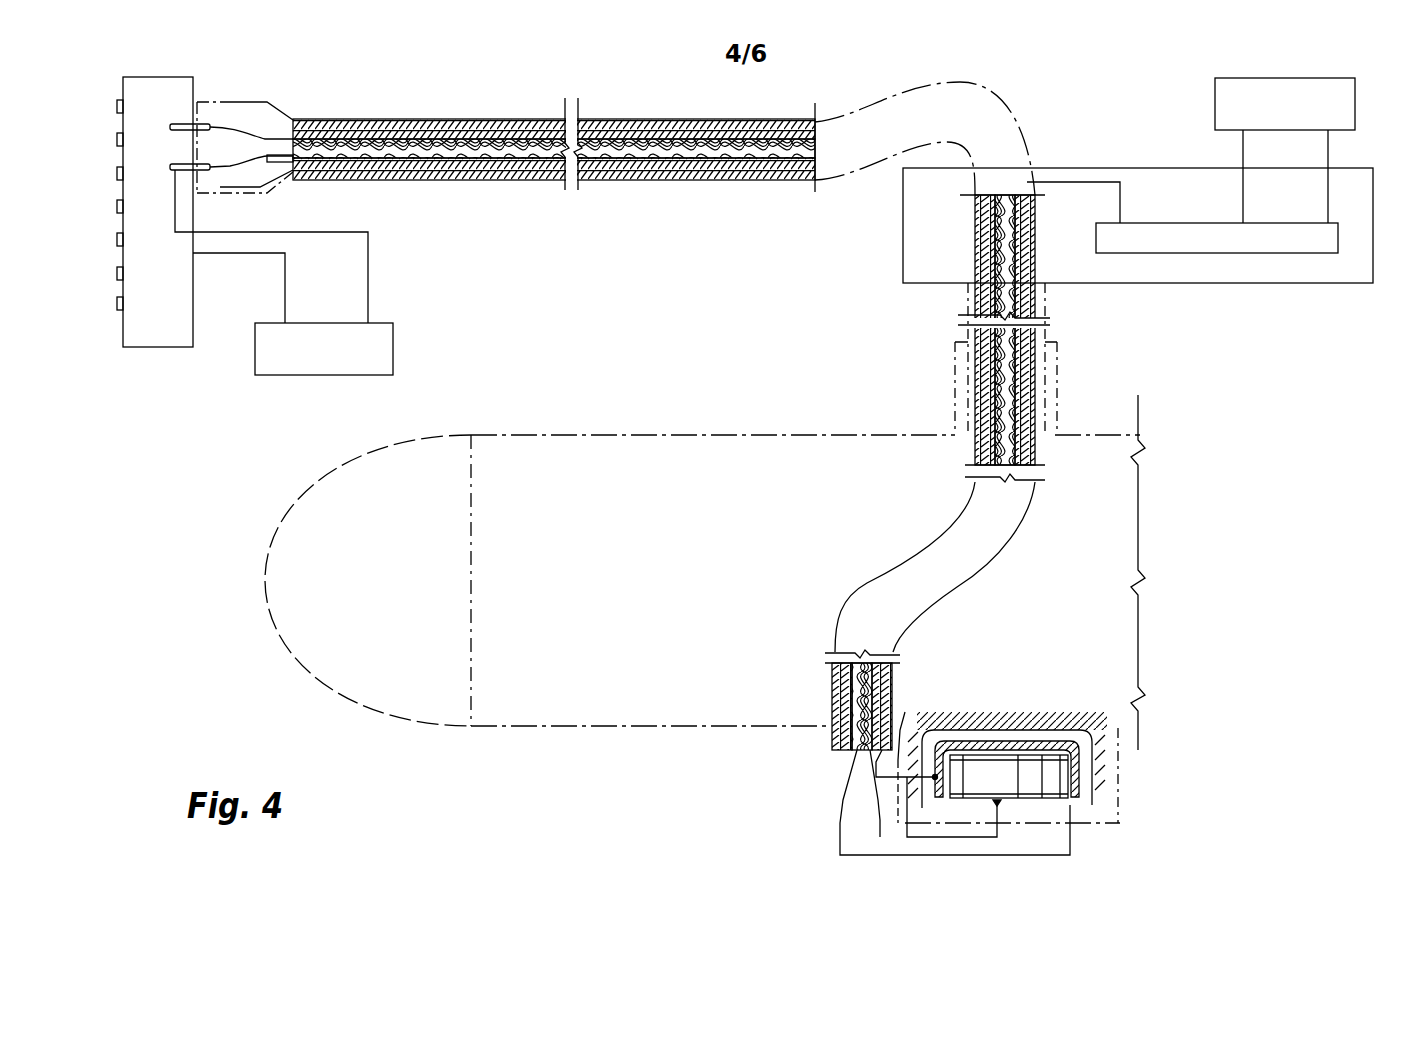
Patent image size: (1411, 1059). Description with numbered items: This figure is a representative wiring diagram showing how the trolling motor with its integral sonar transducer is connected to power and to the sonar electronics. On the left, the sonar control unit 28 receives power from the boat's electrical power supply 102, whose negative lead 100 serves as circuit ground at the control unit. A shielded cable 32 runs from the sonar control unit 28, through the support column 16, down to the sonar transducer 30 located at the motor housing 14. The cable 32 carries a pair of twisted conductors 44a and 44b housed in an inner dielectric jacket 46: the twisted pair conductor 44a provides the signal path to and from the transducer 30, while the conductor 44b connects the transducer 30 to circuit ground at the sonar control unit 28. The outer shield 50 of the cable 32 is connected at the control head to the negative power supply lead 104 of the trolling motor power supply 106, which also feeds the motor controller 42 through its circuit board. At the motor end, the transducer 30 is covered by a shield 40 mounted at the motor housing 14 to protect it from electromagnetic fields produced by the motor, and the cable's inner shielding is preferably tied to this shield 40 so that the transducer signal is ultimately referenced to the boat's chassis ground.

The motor housing 14 is at (376, 688).
The support column 16 is at (960, 337).
The sonar control unit 28 is at (183, 77).
The sonar transducer 30 is at (995, 773).
The cable 32 is at (687, 401).
The shield 40 is at (1047, 740).
The motor controller 42 is at (903, 232).
The twisted pair conductor 44a is at (313, 125).
The conductor 44b is at (303, 165).
The inner dielectric jacket 46 is at (292, 167).
The outer shield 50 is at (440, 125).
The negative lead 100 is at (393, 258).
The boat's electrical power supply 102 is at (397, 343).
The negative power supply lead 104 is at (1330, 187).
The trolling motor power supply 106 is at (1213, 85).